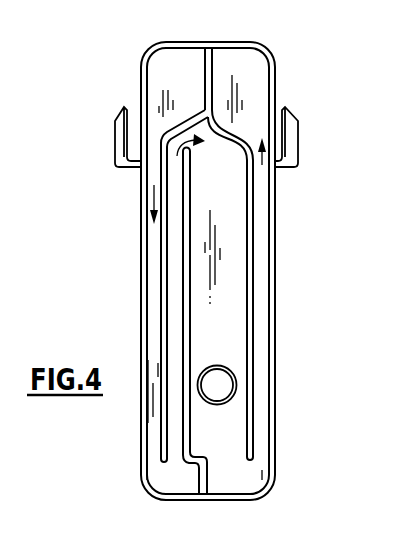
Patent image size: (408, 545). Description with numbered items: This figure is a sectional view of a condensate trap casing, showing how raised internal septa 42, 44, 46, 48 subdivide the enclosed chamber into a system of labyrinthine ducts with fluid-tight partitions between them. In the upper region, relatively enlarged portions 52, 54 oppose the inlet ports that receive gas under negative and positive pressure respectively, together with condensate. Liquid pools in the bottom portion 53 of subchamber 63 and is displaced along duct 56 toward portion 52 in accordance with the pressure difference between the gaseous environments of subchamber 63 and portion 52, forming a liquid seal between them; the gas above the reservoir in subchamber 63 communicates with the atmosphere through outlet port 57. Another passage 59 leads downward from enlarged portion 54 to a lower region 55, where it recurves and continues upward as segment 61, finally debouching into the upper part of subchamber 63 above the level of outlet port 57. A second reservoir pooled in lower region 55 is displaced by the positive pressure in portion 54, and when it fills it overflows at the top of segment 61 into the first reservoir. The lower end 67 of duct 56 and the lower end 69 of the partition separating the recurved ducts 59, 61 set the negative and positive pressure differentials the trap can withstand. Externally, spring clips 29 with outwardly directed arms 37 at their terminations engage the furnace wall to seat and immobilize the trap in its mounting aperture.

The spring clip 29 is at (298, 142).
The outwardly directed arm 37 is at (298, 120).
The internal septum 42 is at (214, 66).
The internal septum 44 is at (163, 301).
The internal septum 46 is at (183, 463).
The internal septum 48 is at (254, 282).
The enlarged portion 52 is at (252, 86).
The bottom portion 53 is at (233, 473).
The enlarged portion 54 is at (176, 76).
The lower region 55 is at (150, 467).
The duct 56 is at (266, 335).
The outlet port 57 is at (224, 384).
The passage 59 is at (153, 266).
The segment 61 is at (180, 246).
The subchamber 63 is at (200, 346).
The lower end of duct 67 is at (268, 471).
The lower end of partition 69 is at (163, 458).